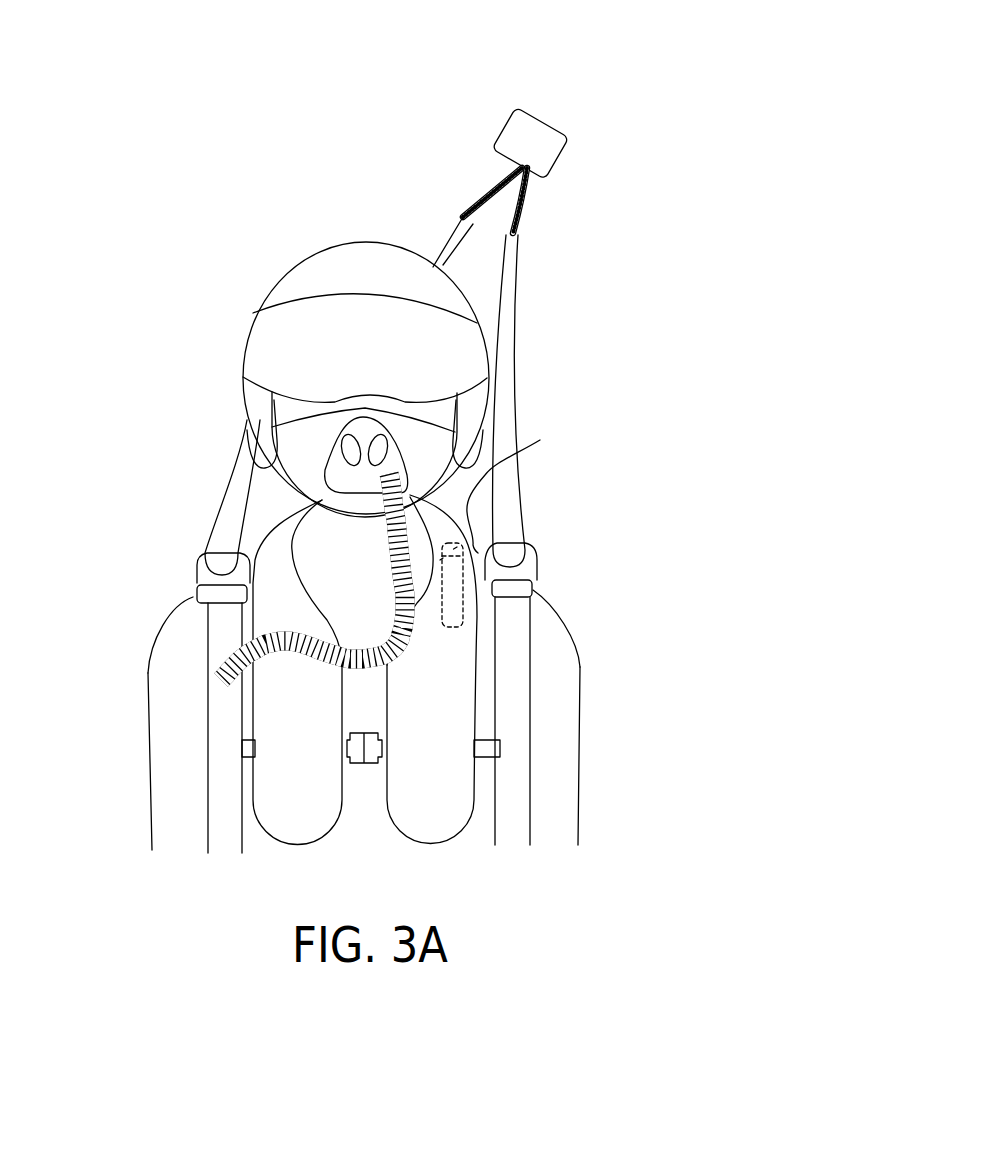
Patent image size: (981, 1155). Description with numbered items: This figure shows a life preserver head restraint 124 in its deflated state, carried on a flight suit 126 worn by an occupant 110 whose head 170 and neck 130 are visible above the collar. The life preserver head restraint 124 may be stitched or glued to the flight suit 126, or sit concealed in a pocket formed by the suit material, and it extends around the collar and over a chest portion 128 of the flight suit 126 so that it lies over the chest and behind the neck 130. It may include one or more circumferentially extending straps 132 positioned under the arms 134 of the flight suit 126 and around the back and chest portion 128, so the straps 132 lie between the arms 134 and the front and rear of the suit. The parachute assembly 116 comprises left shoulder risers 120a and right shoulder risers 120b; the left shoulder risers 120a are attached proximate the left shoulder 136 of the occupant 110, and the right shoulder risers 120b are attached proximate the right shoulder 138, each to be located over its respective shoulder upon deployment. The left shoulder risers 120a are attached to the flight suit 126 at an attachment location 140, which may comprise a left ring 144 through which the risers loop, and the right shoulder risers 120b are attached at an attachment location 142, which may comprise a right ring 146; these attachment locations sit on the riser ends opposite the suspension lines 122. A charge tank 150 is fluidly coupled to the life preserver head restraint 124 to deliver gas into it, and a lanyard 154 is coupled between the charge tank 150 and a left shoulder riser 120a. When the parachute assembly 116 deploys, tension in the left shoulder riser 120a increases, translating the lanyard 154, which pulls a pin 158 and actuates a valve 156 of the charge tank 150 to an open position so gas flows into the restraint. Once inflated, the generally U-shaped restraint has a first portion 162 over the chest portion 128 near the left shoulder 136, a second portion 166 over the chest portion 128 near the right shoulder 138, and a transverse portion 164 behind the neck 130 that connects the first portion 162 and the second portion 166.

The occupant 110 is at (222, 340).
The parachute assembly 116 is at (592, 96).
The left shoulder riser 120a is at (514, 300).
The right shoulder riser 120b is at (443, 230).
The suspension lines 122 is at (490, 190).
The life preserver head restraint 124 is at (266, 772).
The flight suit 126 is at (565, 134).
The chest portion 128 is at (490, 790).
The neck 130 is at (362, 542).
The straps 132 is at (240, 746).
The arms 134 is at (160, 762).
The left shoulder 136 is at (540, 607).
The right shoulder 138 is at (175, 610).
The attachment location 140 is at (548, 582).
The attachment location 142 is at (176, 580).
The left ring 144 is at (525, 578).
The right ring 146 is at (200, 577).
The charge tank 150 is at (440, 630).
The lanyard 154 is at (540, 440).
The valve 156 is at (443, 558).
The pin 158 is at (457, 547).
The first portion 162 is at (445, 705).
The transverse portion 164 is at (318, 510).
The second portion 166 is at (270, 710).
The head 170 is at (292, 283).